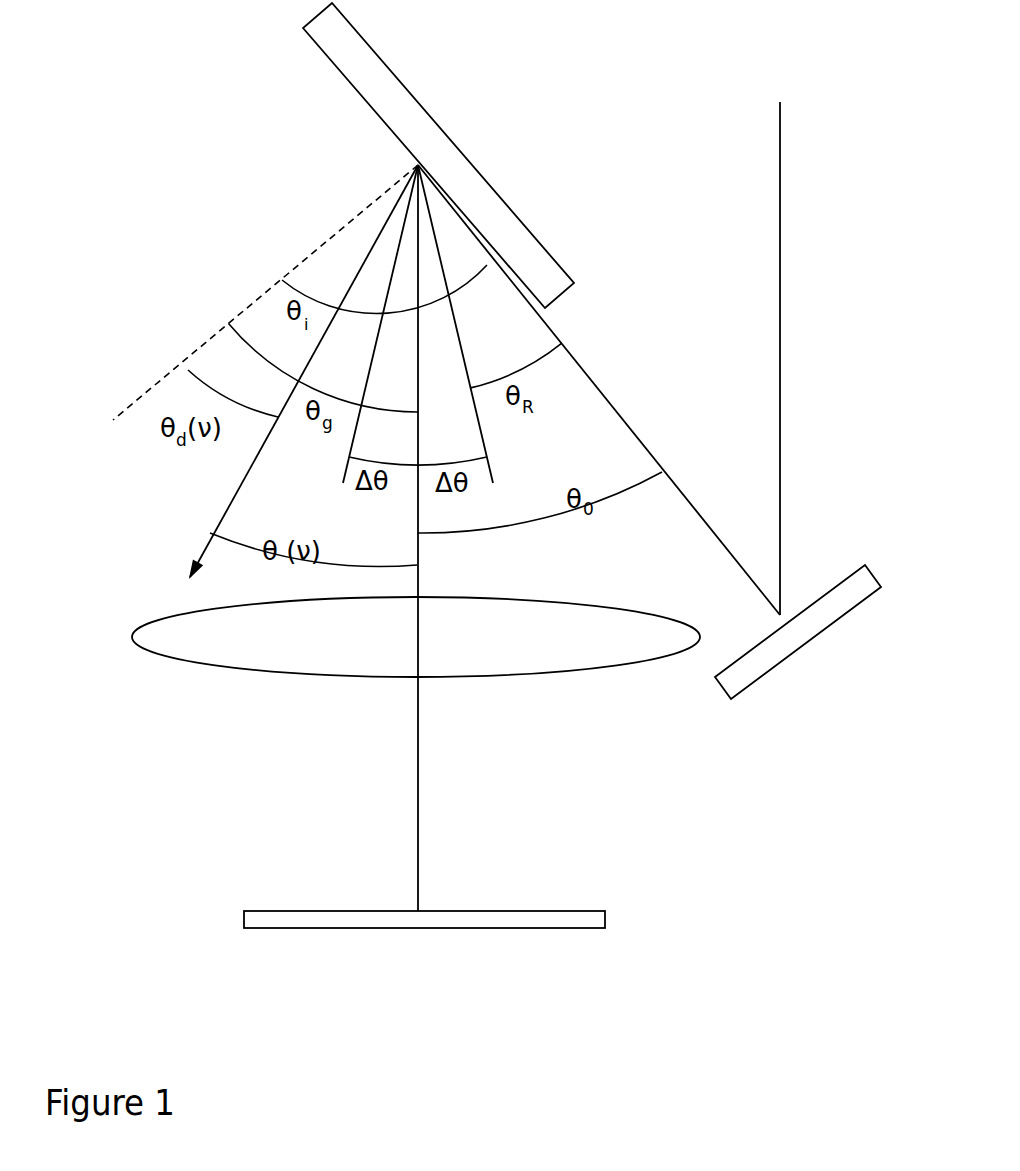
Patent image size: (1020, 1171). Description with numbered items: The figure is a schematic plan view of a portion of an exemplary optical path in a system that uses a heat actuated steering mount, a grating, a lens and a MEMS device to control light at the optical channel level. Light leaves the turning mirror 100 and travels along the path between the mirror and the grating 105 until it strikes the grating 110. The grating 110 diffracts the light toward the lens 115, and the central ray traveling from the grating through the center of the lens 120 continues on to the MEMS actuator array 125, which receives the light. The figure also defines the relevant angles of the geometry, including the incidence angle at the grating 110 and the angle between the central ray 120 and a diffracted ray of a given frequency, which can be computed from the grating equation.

The turning mirror 100 is at (798, 632).
The path between the mirror and the grating 105 is at (599, 358).
The grating 110 is at (438, 155).
The lens 115 is at (416, 652).
The central ray traveling from the grating through the center of the lens 120 is at (441, 538).
The MEMS actuator array 125 is at (424, 937).